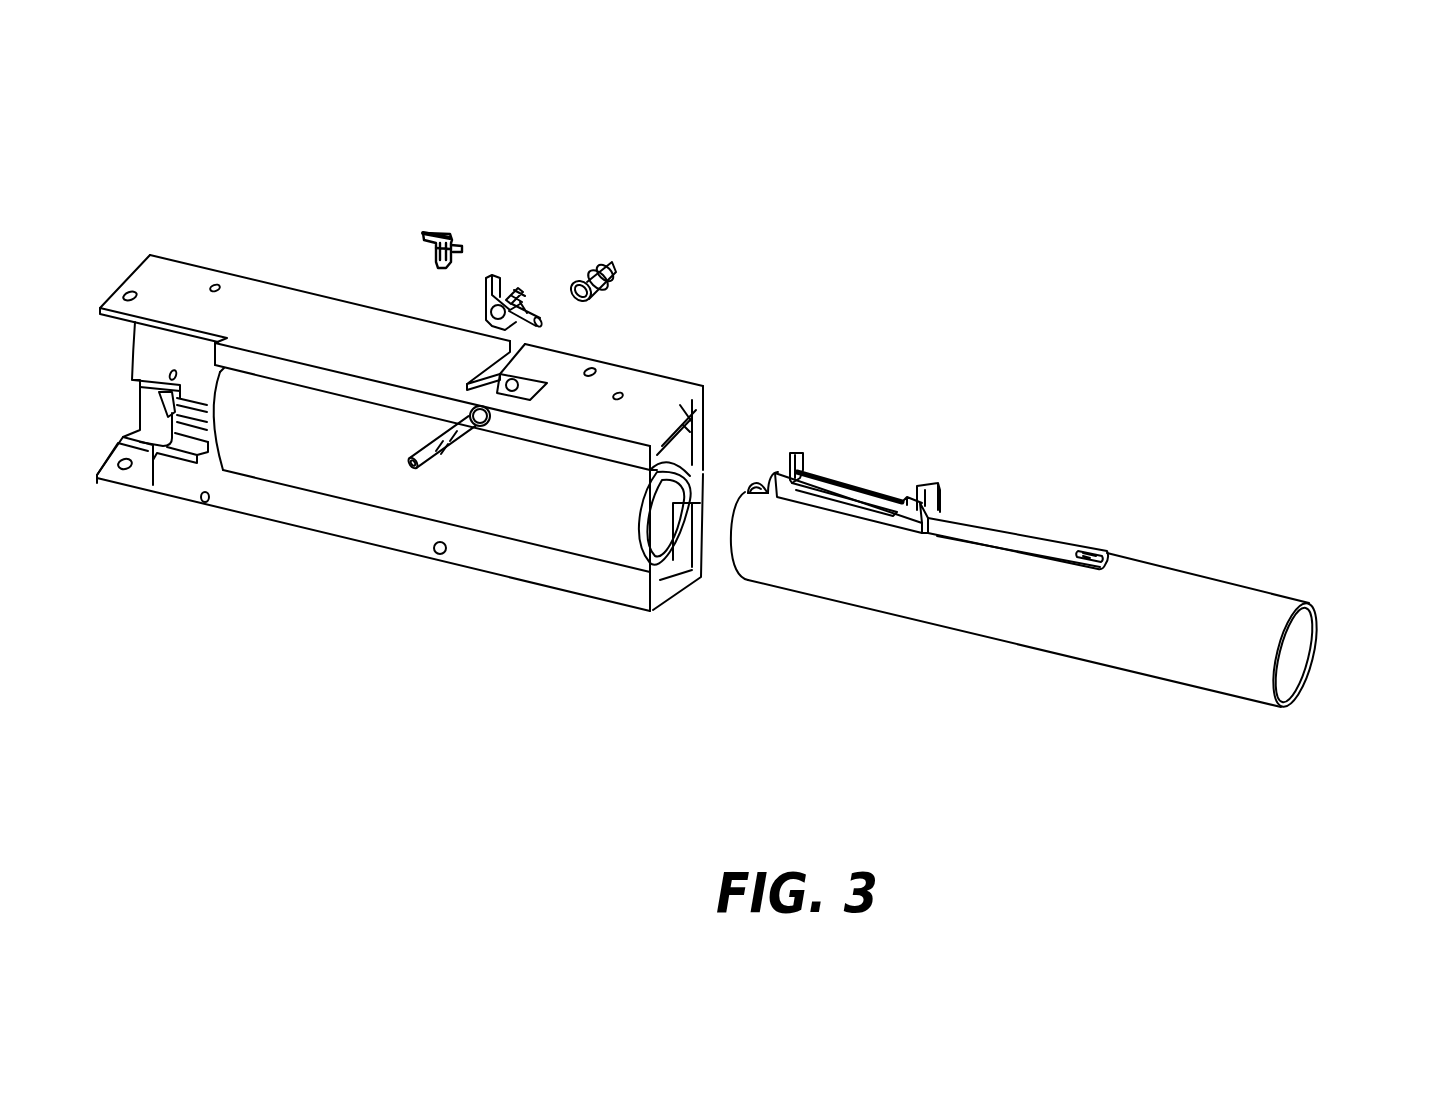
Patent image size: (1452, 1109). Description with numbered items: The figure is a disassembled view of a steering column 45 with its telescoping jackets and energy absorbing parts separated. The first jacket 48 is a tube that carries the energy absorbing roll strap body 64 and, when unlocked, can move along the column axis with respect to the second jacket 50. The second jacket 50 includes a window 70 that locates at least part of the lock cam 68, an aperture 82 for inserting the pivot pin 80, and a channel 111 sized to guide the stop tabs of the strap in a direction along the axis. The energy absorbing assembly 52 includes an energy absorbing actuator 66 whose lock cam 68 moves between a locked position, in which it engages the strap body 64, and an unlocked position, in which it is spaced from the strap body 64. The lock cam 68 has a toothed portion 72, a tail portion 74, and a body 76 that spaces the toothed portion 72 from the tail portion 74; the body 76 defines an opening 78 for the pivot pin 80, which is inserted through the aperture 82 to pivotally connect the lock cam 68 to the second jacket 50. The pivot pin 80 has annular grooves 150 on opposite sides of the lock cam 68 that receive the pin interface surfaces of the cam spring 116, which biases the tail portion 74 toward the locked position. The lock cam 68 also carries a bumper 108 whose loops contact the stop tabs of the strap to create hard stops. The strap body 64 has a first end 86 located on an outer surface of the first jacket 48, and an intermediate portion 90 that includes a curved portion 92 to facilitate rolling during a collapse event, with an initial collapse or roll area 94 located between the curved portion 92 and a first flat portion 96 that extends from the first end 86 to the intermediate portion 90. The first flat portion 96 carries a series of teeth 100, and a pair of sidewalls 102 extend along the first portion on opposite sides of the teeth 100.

The cable connector assembly 45 is at (1322, 317).
The first jacket 48 is at (1321, 605).
The second jacket 50 is at (272, 273).
The energy absorbing assembly 52 is at (882, 364).
The energy absorbing roll strap body 64 is at (958, 512).
The energy absorbing actuator 66 is at (560, 232).
The lock cam 68 is at (553, 318).
The window 70 is at (523, 398).
The toothed portion 72 is at (532, 338).
The tail portion 74 is at (490, 272).
The body 76 is at (483, 318).
The opening 78 is at (515, 288).
The pivot pin 80 is at (432, 466).
The aperture 82 is at (483, 418).
The first end 86 is at (1102, 550).
The intermediate portion 90 is at (742, 478).
The curved portion 92 is at (766, 468).
The initial collapse or roll area 94 is at (786, 455).
The first flat portion 96 is at (864, 481).
The teeth 100 is at (838, 490).
The sidewalls 102 is at (895, 490).
The bumper 108 is at (613, 254).
The channel 111 is at (672, 435).
The cam spring 116 is at (433, 217).
The annular grooves 150 is at (481, 428).